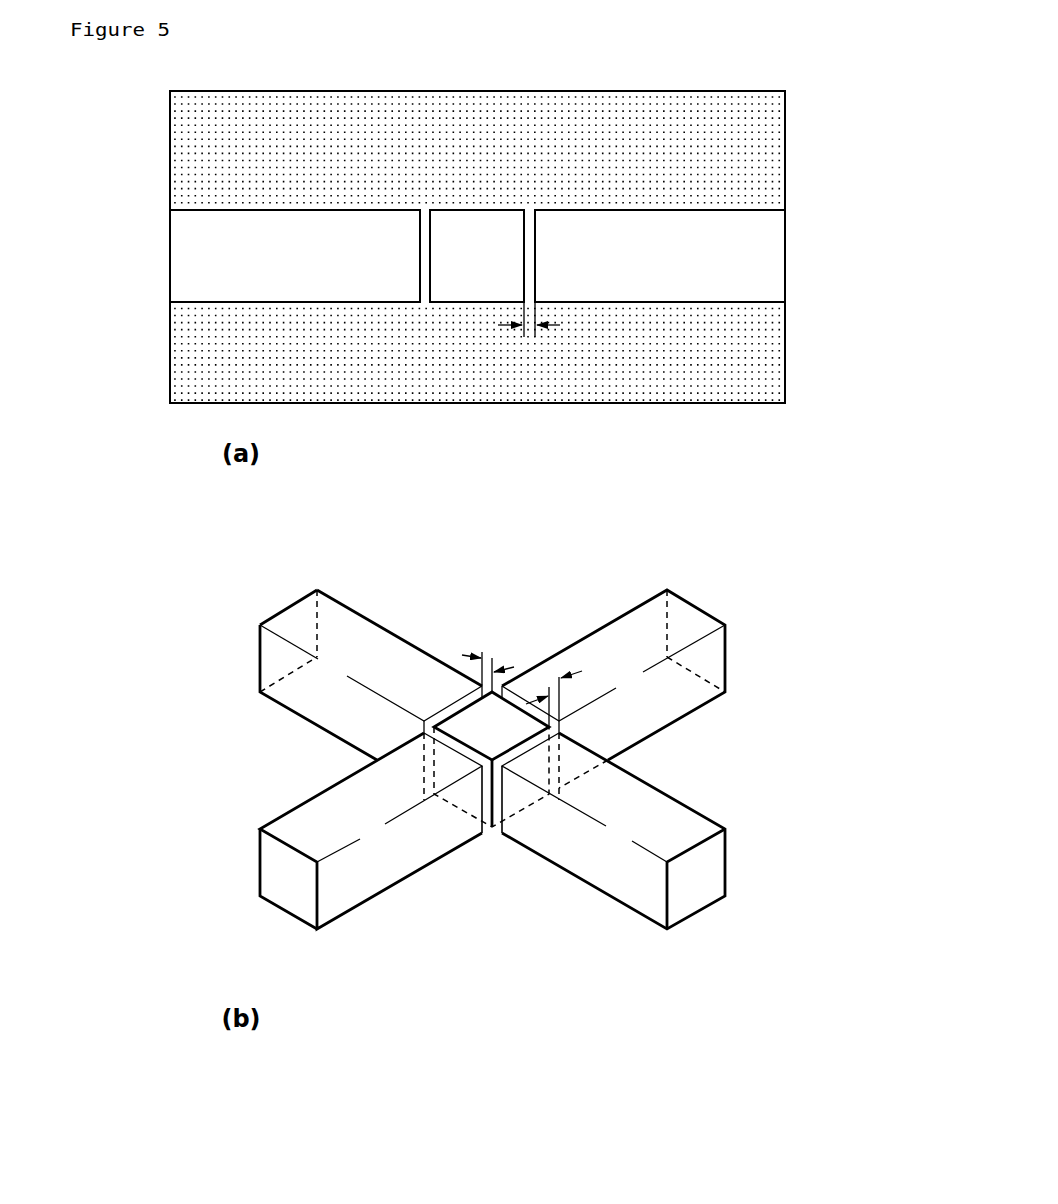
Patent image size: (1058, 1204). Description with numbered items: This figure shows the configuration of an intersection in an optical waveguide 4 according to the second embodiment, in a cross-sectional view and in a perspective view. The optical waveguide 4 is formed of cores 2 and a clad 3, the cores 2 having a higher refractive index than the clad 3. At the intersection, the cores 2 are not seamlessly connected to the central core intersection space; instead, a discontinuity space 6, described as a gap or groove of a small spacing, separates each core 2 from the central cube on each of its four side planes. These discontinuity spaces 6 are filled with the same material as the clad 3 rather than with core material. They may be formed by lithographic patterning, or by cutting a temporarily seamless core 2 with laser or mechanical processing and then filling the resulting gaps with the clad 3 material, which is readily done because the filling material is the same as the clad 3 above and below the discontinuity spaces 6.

The core 2 is at (307, 815).
The clad 3 is at (668, 1036).
The optical waveguide 4 is at (168, 255).
The discontinuity space 6 is at (451, 706).